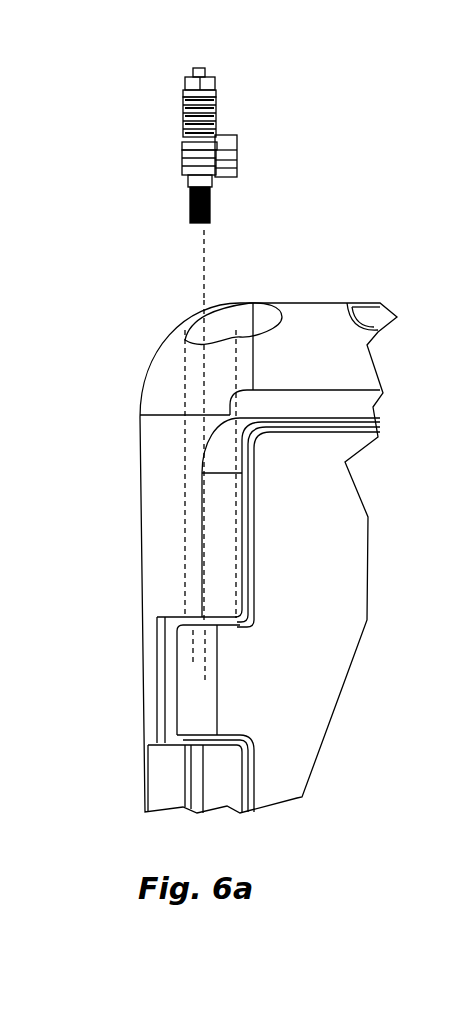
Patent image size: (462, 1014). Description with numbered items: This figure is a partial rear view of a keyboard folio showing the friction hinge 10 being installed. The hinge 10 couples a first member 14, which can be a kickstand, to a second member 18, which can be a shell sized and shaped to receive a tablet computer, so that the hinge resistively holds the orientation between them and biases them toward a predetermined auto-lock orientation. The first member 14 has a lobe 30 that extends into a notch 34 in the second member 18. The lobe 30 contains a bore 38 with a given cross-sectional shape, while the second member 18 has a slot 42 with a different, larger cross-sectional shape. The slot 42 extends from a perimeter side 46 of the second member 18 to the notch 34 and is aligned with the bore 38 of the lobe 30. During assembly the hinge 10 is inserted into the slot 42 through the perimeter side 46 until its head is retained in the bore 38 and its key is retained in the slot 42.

The hinge 10 is at (258, 135).
The first member 14 is at (327, 535).
The second member 18 is at (365, 365).
The lobe 30 is at (203, 693).
The notch 34 is at (160, 740).
The bore 38 is at (190, 647).
The slot 42 is at (185, 450).
The perimeter side 46 is at (343, 300).